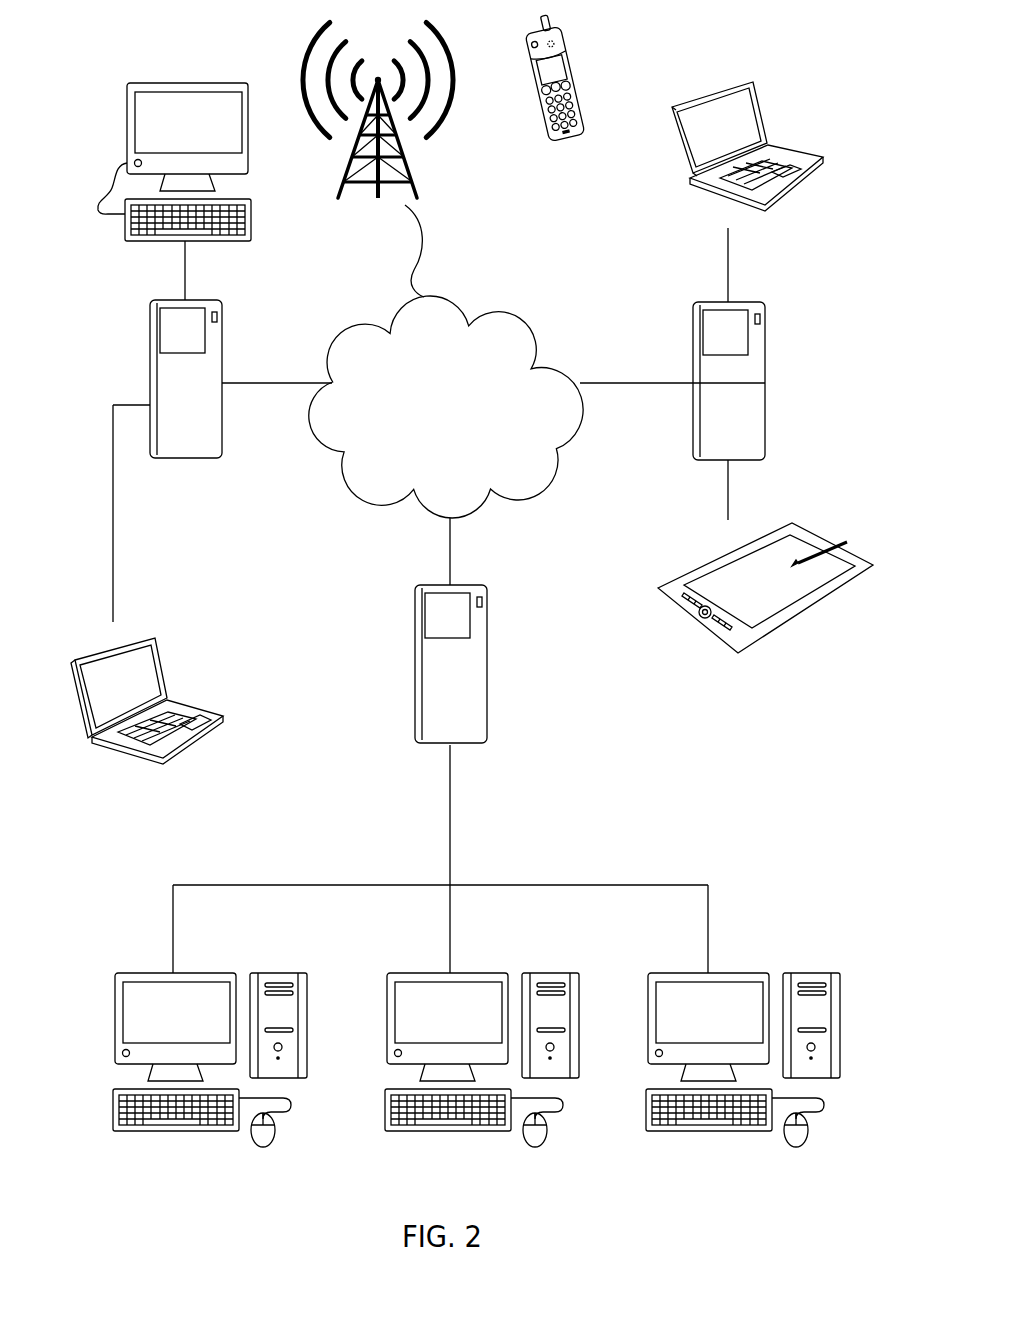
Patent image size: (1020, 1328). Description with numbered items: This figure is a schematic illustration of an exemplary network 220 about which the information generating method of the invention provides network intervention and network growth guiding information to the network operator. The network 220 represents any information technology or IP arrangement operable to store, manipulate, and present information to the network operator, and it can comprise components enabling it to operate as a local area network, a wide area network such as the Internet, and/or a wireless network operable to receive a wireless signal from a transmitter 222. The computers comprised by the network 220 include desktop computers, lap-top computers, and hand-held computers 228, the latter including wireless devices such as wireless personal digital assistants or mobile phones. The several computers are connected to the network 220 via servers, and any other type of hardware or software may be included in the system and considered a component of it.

The network 220 is at (446, 407).
The transmitter 222 is at (453, 112).
The hand-held computers 228 is at (567, 43).